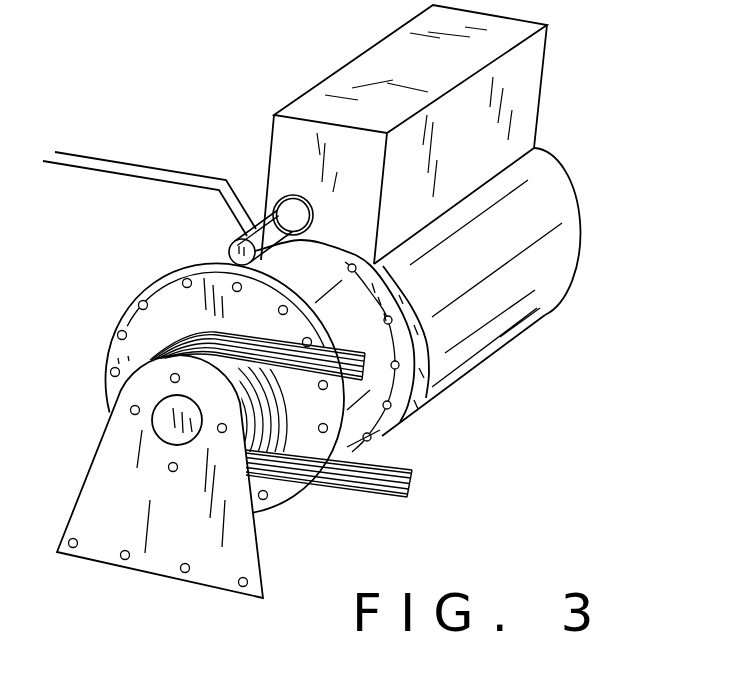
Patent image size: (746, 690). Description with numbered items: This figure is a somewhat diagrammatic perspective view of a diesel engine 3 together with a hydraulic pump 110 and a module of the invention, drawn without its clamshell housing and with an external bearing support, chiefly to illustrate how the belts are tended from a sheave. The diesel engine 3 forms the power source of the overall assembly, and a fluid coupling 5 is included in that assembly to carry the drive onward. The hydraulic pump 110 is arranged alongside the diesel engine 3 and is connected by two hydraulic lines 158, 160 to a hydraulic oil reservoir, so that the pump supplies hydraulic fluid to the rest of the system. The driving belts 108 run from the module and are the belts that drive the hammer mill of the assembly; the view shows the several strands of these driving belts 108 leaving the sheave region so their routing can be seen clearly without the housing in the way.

The diesel engine 3 is at (483, 333).
The fluid coupling 5 is at (393, 423).
The driving belts 108 is at (352, 495).
The hydraulic pump 110 is at (238, 238).
The hydraulic line 158 is at (157, 166).
The hydraulic line 160 is at (118, 178).